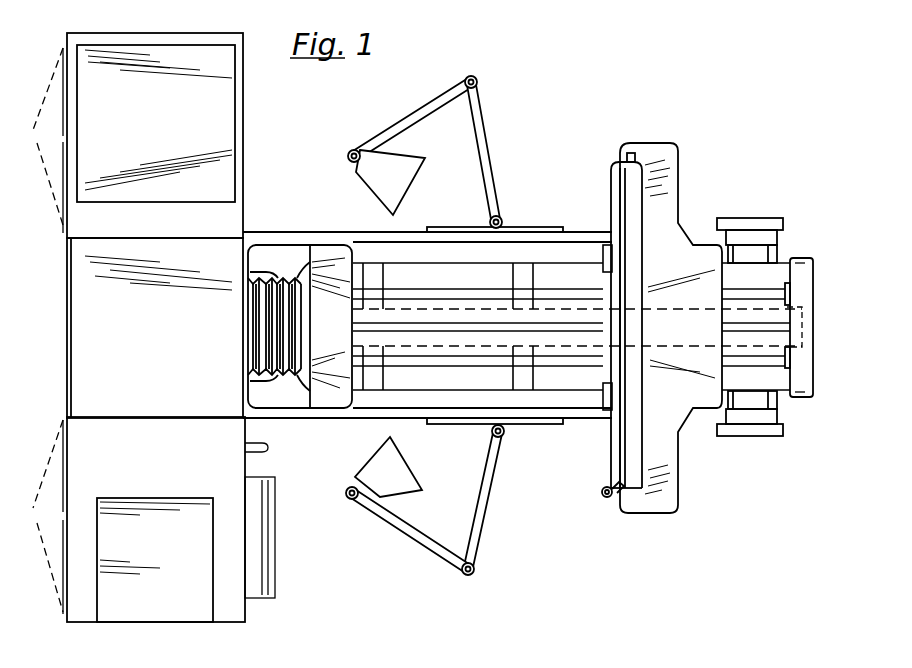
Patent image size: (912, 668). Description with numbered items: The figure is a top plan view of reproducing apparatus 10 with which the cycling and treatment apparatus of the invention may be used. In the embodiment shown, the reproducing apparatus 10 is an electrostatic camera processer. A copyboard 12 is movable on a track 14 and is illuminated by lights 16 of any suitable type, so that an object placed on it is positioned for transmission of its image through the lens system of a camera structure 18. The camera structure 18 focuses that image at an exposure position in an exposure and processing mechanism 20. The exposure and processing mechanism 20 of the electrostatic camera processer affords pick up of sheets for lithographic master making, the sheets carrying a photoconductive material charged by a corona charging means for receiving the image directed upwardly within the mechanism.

The reproducing apparatus 10 is at (577, 231).
The copyboard 12 is at (609, 462).
The track 14 is at (373, 395).
The lights 16 is at (411, 184).
The camera structure 18 is at (296, 271).
The exposure and processing mechanism 20 is at (247, 163).